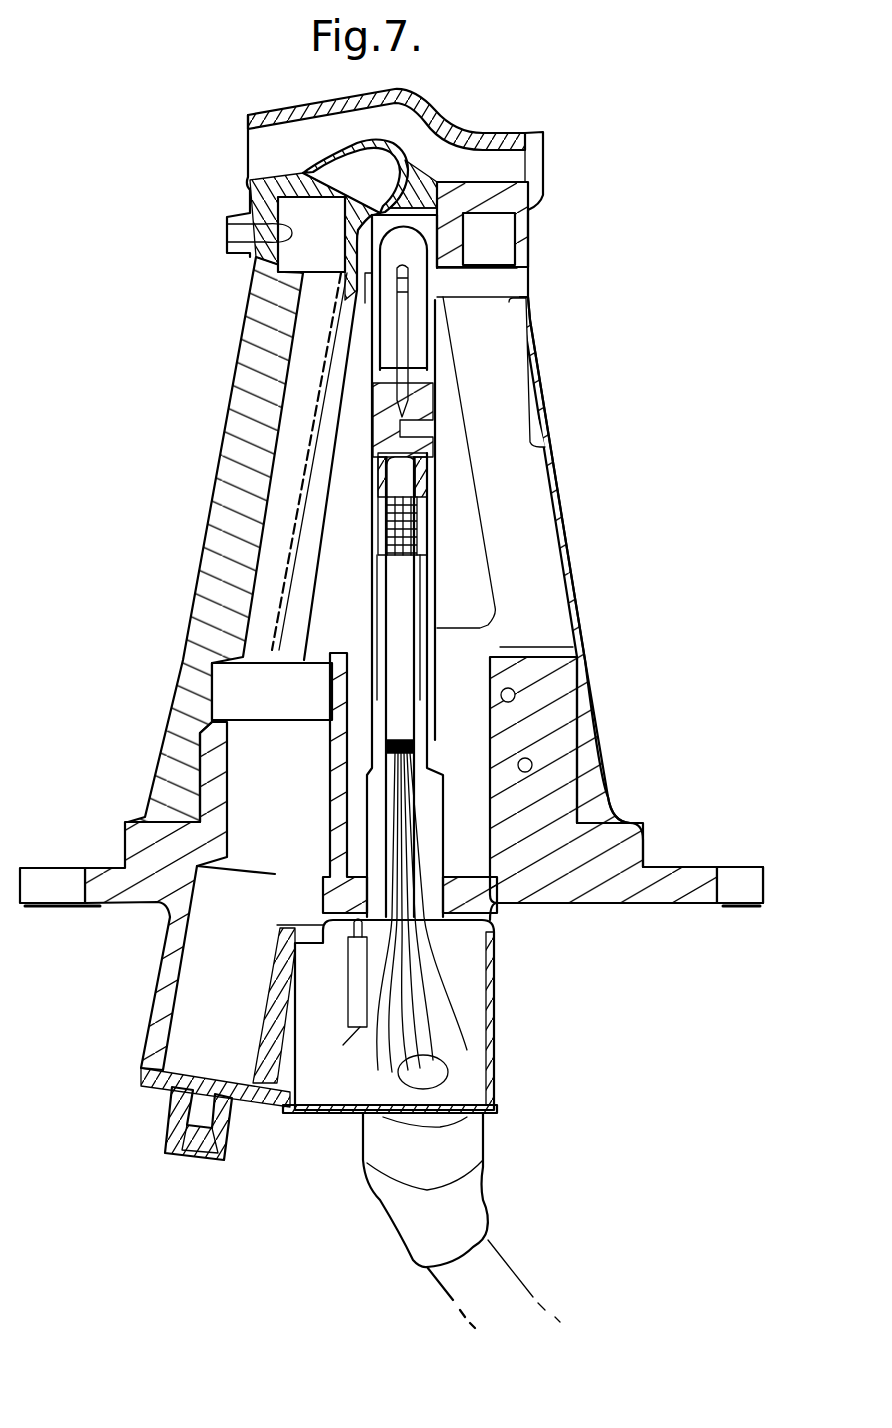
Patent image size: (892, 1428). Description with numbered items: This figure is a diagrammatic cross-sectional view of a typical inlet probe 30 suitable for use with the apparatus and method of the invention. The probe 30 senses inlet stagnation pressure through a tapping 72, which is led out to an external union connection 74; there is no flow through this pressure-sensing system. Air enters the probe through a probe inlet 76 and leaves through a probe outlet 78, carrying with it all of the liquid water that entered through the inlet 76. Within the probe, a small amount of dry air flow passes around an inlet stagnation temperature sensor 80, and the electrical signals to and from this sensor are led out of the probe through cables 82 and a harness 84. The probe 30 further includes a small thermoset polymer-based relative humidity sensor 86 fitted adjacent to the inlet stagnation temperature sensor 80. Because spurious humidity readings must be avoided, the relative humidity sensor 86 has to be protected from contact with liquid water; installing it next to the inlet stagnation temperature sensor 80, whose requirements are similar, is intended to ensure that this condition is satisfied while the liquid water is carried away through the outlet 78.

The inlet probe 30 is at (368, 1238).
The tapping 72 is at (228, 238).
The external union connection 74 is at (178, 1155).
The probe inlet 76 is at (250, 150).
The probe outlet 78 is at (543, 163).
The inlet stagnation temperature sensor 80 is at (407, 598).
The cables 82 is at (427, 938).
The harness 84 is at (492, 1252).
The relative humidity sensor 86 is at (407, 523).